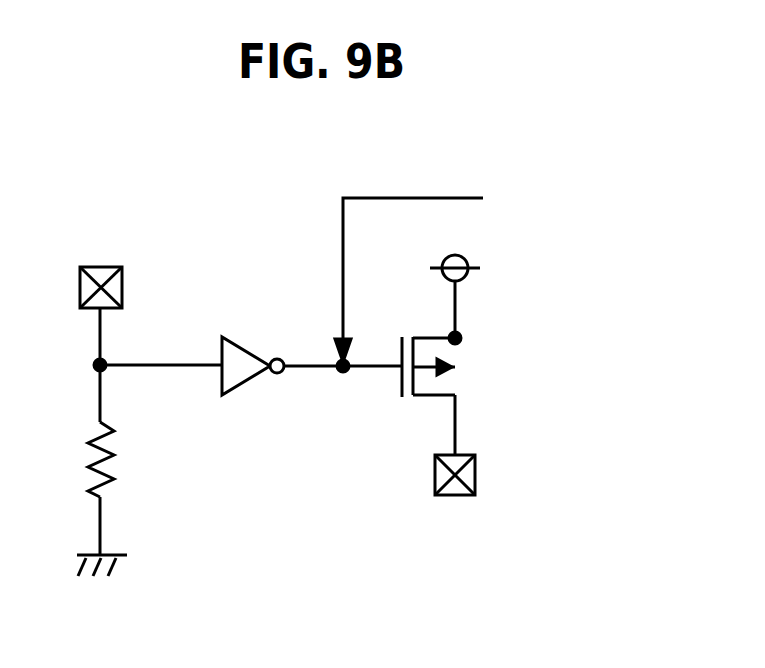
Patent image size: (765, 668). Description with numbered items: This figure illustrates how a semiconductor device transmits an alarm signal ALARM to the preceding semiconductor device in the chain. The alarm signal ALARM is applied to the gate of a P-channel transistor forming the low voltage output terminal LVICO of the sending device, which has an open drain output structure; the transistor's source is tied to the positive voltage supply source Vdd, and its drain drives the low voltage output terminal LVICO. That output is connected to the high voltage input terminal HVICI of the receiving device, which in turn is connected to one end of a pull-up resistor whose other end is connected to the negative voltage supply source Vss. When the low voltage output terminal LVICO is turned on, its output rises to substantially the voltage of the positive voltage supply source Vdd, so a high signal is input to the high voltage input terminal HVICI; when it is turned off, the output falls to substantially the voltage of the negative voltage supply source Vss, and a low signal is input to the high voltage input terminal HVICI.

The high voltage input terminal HVICI is at (150, 271).
The low voltage output terminal LVICO is at (532, 475).
The positive voltage supply source Vdd is at (481, 296).
The negative voltage supply source Vss is at (102, 582).
The alarm signal ALARM is at (457, 267).